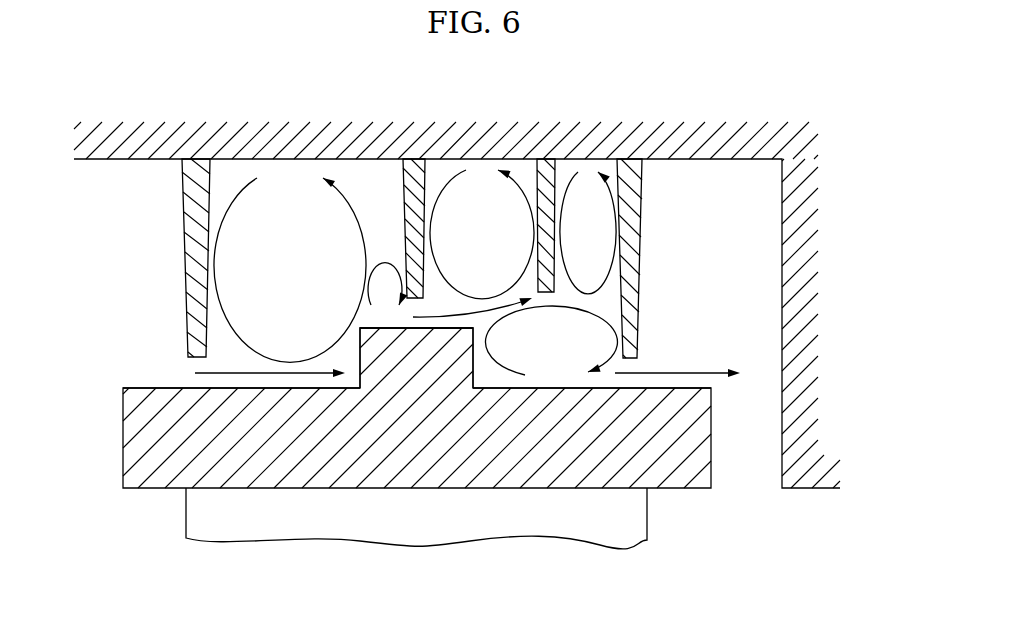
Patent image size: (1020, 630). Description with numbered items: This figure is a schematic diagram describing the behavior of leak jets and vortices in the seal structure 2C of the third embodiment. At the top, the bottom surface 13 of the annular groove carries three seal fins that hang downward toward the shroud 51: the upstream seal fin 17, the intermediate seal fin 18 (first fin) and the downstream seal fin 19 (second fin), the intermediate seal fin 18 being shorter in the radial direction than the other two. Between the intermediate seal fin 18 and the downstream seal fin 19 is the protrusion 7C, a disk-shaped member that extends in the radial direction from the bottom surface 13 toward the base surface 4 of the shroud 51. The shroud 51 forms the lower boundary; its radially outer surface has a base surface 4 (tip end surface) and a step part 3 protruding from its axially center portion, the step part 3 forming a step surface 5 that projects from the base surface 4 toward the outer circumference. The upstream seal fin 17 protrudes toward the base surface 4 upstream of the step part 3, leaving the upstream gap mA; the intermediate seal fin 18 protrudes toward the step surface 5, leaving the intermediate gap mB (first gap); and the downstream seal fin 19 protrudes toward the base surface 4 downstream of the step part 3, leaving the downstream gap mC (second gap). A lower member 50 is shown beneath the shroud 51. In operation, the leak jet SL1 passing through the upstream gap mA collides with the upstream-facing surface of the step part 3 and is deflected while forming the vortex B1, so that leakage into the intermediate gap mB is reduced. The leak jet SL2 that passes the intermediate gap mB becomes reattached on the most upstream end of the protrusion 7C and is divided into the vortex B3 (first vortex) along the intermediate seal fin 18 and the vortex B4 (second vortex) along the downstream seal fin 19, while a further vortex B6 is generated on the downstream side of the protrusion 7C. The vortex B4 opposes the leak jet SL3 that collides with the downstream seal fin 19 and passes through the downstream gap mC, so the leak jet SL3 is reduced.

The bottom surface 13 is at (365, 173).
The upstream seal fin 17 is at (203, 213).
The intermediate seal fin 18 is at (425, 190).
The protrusion 7C is at (553, 175).
The downstream seal fin 19 is at (643, 197).
The seal structure 2C is at (156, 240).
The shroud 51 is at (712, 438).
The base surface 4 is at (712, 388).
The step part 3 is at (385, 350).
The step surface 5 is at (455, 325).
The lower member 50 is at (630, 520).
The upstream gap mA is at (193, 378).
The intermediate gap mB is at (413, 320).
The downstream gap mC is at (630, 382).
The stream line 1 SL1 is at (265, 378).
The leak jet SL2 is at (487, 315).
The leak jet SL3 is at (688, 372).
The vortex B1 is at (222, 224).
The vortex B3 is at (434, 245).
The vortex B4 is at (597, 318).
The vortex B6 is at (562, 252).